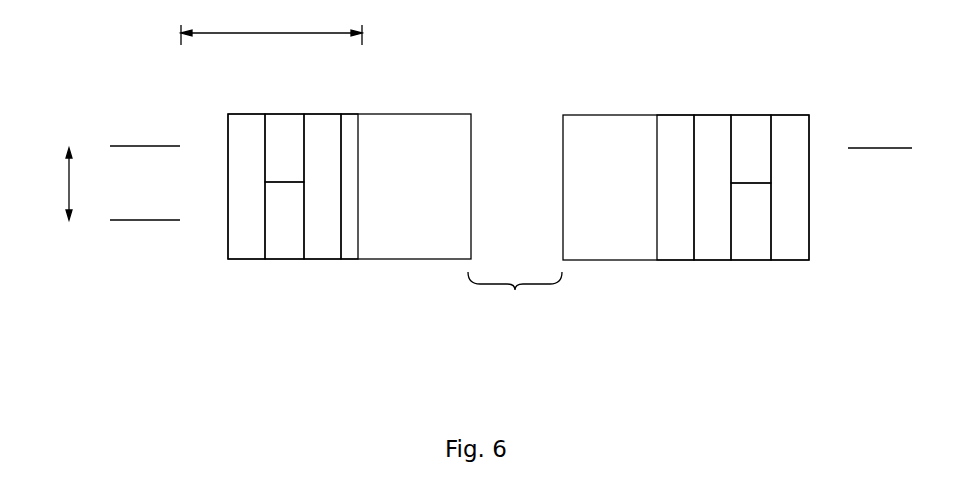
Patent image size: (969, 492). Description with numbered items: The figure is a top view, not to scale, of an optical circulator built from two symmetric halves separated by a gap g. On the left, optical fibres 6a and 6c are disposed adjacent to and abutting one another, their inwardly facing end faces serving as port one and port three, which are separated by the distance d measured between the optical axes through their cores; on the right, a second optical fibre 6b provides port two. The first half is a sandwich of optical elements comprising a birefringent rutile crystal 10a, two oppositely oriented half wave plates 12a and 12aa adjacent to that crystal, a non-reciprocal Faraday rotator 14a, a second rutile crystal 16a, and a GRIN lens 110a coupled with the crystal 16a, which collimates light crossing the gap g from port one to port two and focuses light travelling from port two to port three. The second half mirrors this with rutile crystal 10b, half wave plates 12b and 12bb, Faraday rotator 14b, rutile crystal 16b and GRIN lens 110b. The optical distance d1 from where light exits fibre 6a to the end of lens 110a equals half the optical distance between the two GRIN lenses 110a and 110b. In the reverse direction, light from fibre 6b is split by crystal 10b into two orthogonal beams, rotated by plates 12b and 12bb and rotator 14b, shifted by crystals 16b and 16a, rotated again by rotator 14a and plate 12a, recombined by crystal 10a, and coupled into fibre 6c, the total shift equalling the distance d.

The optical fibre 6a is at (145, 143).
The optical fibre 6b is at (870, 146).
The optical fibre 6c is at (149, 222).
The rutile crystal 10a is at (250, 254).
The rutile crystal 10b is at (787, 125).
The half wave plate 12a is at (285, 122).
The half wave plate 12aa is at (280, 252).
The half wave plate 12b is at (755, 125).
The half wave plate 12bb is at (748, 250).
The non-reciprocal Faraday rotator 14a is at (324, 250).
The non-reciprocal Faraday rotator 14b is at (712, 253).
The rutile crystal 16a is at (348, 120).
The rutile crystal 16b is at (668, 255).
The GRIN lens 110a is at (423, 113).
The GRIN lens 110b is at (583, 125).
The distance d is at (51, 184).
The optical distance d1 is at (271, 25).
The gap g is at (515, 298).